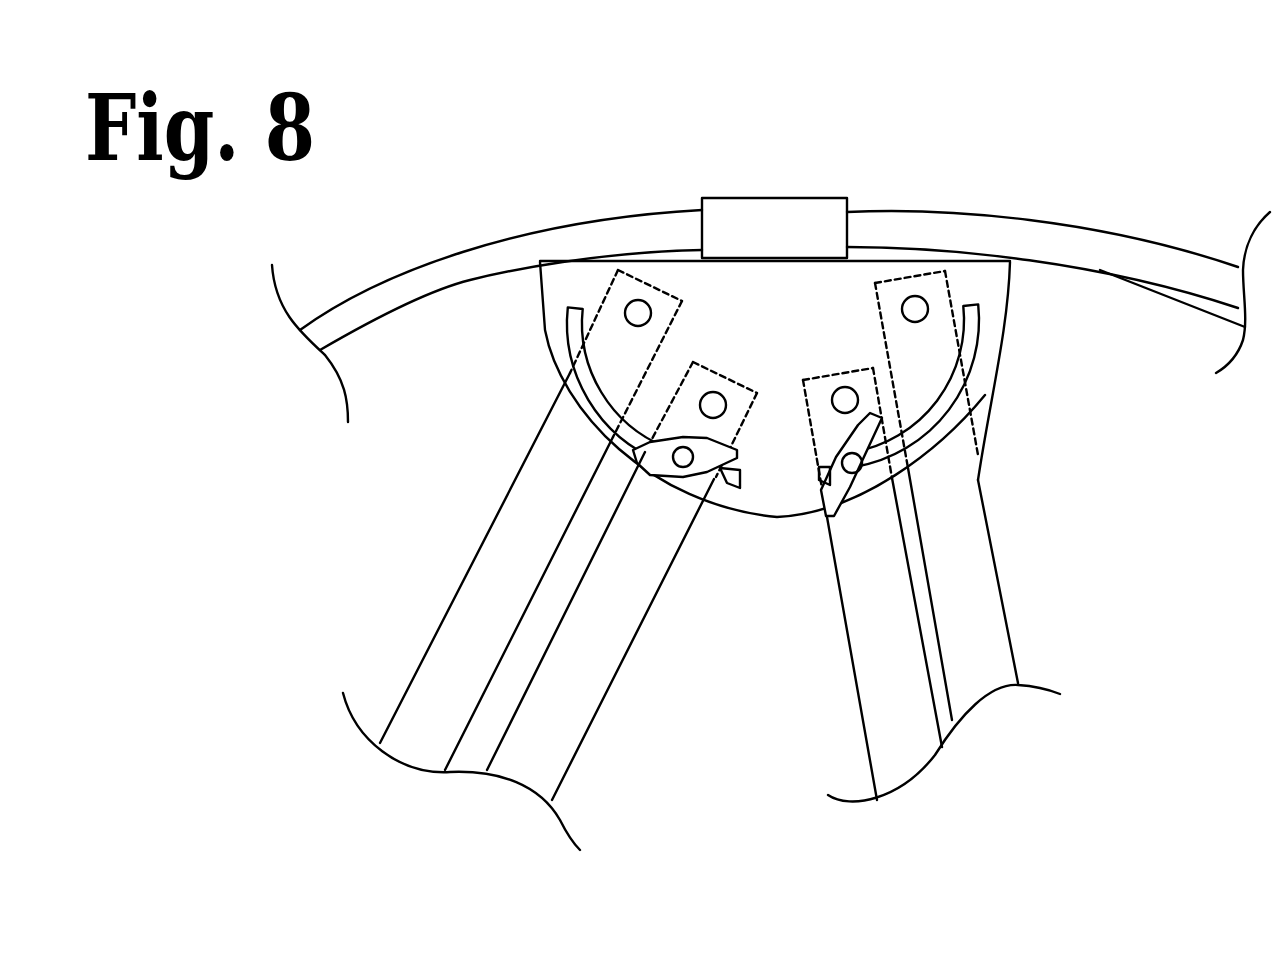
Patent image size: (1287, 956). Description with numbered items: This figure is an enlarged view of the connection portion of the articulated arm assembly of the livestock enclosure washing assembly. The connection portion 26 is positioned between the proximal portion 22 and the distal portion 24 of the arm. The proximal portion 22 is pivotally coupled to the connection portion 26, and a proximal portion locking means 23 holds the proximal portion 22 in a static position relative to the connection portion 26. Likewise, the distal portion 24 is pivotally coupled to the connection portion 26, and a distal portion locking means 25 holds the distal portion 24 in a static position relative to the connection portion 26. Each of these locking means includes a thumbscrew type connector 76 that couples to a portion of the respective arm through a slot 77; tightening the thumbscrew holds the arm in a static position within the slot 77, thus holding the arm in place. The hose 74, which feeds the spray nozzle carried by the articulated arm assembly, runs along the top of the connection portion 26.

The hose 74 is at (978, 228).
The slot 77 is at (568, 332).
The distal portion locking means 25 is at (572, 438).
The proximal portion locking means 23 is at (990, 430).
The connection portion 26 is at (762, 520).
The thumbscrew type connector 76 is at (662, 468).
The distal portion 24 is at (420, 793).
The proximal portion 22 is at (1035, 650).